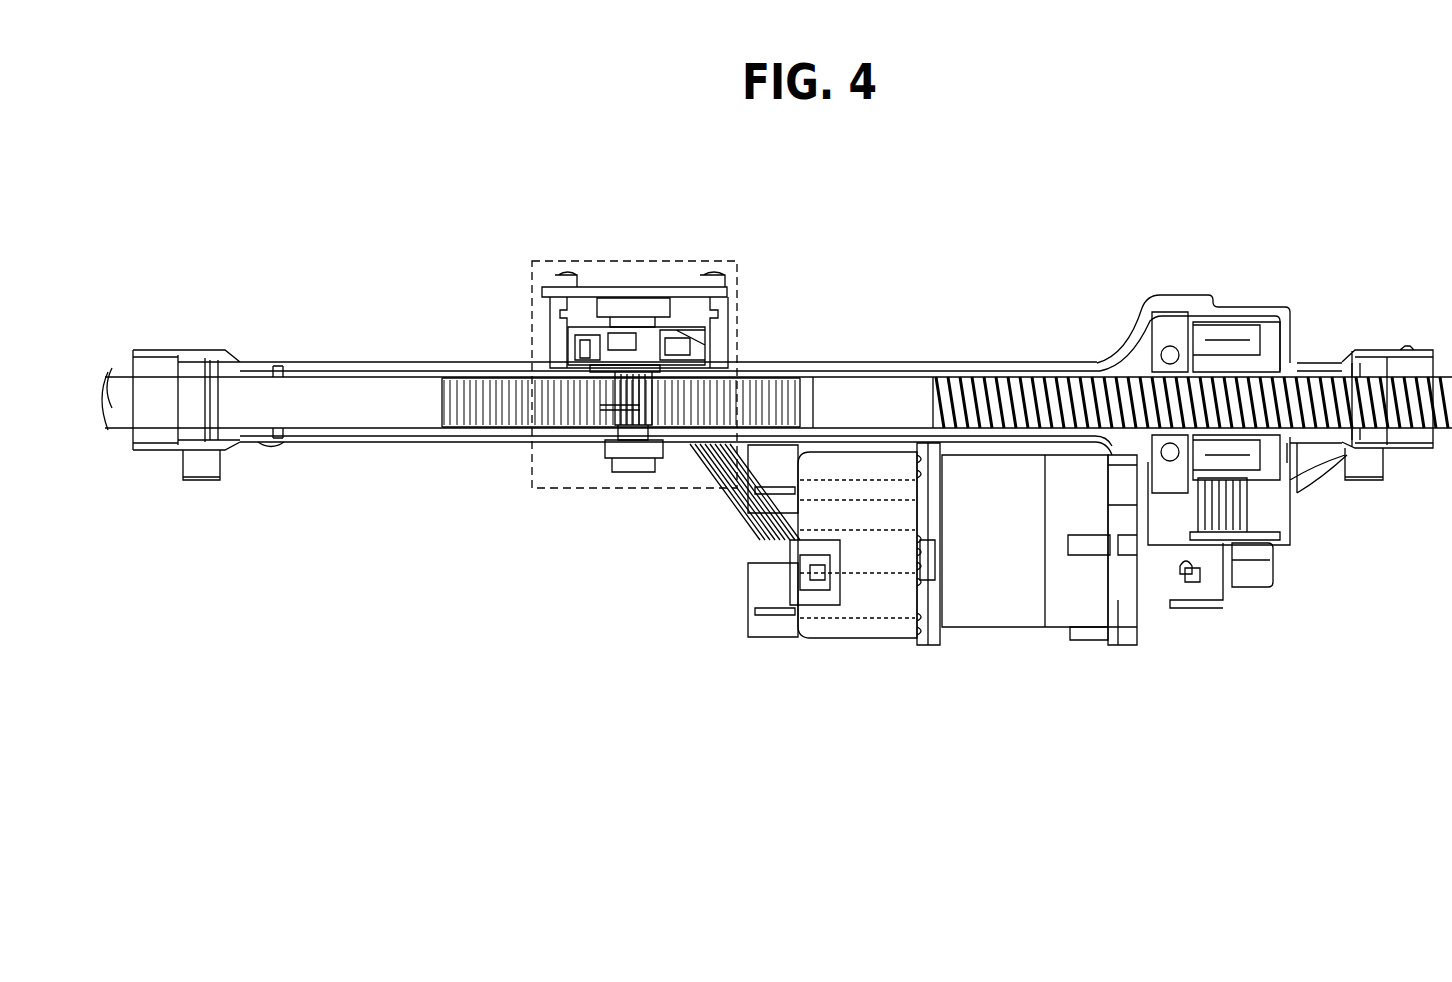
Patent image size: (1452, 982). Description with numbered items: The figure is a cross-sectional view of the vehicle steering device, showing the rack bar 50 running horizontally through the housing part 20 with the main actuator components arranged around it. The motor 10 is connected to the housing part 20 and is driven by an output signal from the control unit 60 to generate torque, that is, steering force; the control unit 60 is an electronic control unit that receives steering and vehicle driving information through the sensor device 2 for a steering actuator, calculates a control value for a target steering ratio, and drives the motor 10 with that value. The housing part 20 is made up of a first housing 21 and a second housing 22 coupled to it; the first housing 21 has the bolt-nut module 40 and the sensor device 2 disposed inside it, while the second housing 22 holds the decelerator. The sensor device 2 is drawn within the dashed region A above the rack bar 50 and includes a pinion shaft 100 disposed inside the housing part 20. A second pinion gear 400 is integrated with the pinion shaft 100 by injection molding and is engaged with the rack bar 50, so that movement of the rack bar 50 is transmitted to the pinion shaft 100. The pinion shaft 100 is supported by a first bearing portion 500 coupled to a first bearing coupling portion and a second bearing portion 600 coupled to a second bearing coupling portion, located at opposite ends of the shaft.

The sensor device for a steering actuator 2 is at (628, 364).
The enlarged region A is at (728, 262).
The motor 10 is at (1018, 580).
The housing part 20 is at (1235, 527).
The first housing 21 is at (1185, 558).
The second housing 22 is at (1252, 580).
The bolt-nut module 40 is at (1170, 330).
The rack bar 50 is at (865, 390).
The control unit 60 is at (884, 597).
The pinion shaft 100 is at (620, 417).
The second pinion gear 400 is at (655, 418).
The first bearing portion 500 is at (612, 307).
The second bearing portion 600 is at (610, 465).